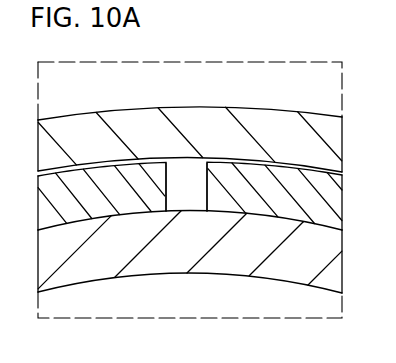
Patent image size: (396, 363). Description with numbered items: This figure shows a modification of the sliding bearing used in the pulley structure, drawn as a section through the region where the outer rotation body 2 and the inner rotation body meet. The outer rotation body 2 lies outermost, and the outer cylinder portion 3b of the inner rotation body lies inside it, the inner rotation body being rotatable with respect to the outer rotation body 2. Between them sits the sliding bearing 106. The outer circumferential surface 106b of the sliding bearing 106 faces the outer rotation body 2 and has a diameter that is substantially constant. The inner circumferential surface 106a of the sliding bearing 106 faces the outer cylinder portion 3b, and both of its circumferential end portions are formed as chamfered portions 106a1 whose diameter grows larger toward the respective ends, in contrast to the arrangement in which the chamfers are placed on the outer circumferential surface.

The outer rotation body 2 is at (193, 107).
The sliding bearing 106 is at (190, 222).
The inner circumferential surface 106a is at (257, 214).
The chamfered portion 106a1 is at (152, 211).
The outer circumferential surface 106b is at (72, 172).
The outer cylinder portion 3b is at (273, 265).